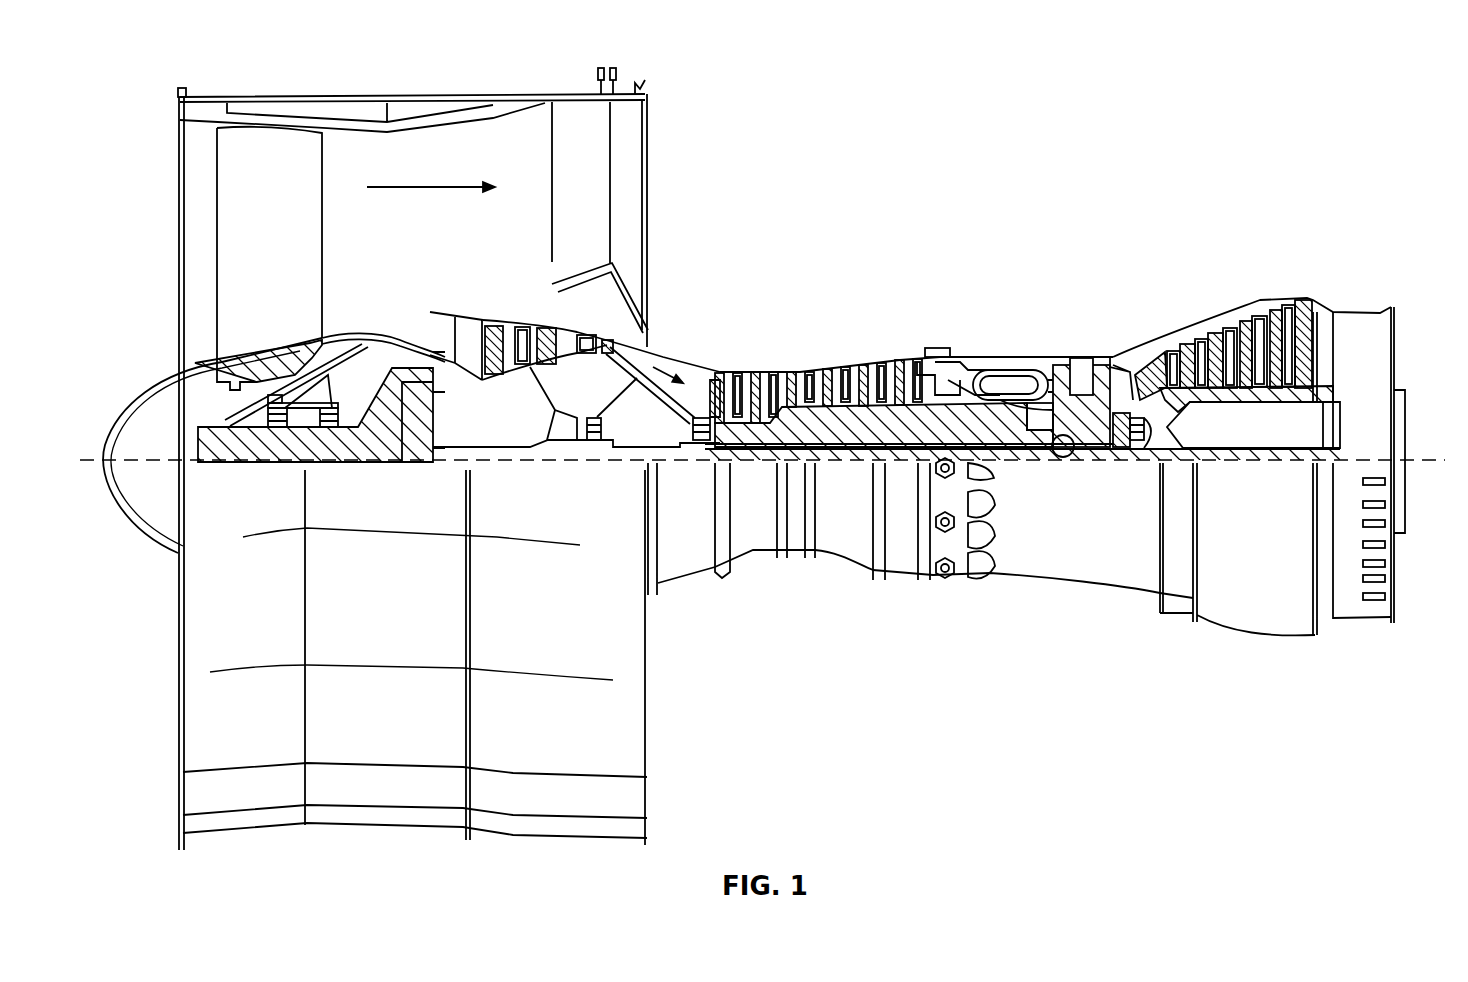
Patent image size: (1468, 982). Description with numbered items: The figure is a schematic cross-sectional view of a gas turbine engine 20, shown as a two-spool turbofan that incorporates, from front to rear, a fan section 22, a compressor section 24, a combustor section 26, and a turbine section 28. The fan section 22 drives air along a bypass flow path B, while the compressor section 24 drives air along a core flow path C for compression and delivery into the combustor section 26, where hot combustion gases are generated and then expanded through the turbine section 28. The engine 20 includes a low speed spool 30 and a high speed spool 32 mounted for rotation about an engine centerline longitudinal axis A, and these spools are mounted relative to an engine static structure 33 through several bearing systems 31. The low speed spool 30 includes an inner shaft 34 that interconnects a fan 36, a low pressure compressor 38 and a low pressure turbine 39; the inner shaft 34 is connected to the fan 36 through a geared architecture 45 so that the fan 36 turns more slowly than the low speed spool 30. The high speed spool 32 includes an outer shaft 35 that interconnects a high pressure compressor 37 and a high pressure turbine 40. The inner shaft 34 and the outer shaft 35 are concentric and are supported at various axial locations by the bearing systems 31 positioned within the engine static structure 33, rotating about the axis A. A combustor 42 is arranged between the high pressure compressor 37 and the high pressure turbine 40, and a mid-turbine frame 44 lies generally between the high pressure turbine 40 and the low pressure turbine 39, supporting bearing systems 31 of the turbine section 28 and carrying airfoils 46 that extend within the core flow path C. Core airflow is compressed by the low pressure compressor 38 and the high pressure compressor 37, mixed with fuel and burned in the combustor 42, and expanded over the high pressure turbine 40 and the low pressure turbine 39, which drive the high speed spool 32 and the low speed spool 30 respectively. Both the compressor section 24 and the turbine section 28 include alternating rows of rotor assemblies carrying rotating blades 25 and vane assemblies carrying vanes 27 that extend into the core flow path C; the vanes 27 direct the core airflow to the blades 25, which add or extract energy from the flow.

The gas turbine engine 20 is at (1260, 142).
The fan section 22 is at (472, 56).
The compressor section 24 is at (828, 305).
The blades 25 is at (492, 328).
The combustor section 26 is at (1018, 285).
The vanes 27 is at (517, 330).
The turbine section 28 is at (1308, 192).
The low speed spool 30 is at (855, 468).
The bearing systems 31 is at (275, 422).
The high speed spool 32 is at (890, 420).
The engine static structure 33 is at (905, 578).
The inner shaft 34 is at (680, 452).
The outer shaft 35 is at (1075, 447).
The fan 36 is at (256, 236).
The high pressure compressor 37 is at (793, 378).
The low pressure compressor 38 is at (560, 335).
The low pressure turbine 39 is at (1265, 310).
The high pressure turbine 40 is at (1083, 362).
The combustor 42 is at (1010, 385).
The mid-turbine frame 44 is at (1127, 349).
The geared architecture 45 is at (425, 440).
The airfoils 46 is at (1135, 377).
The engine centerline longitudinal axis A is at (1425, 460).
The bypass flow path B is at (427, 186).
The core flow path C is at (670, 351).